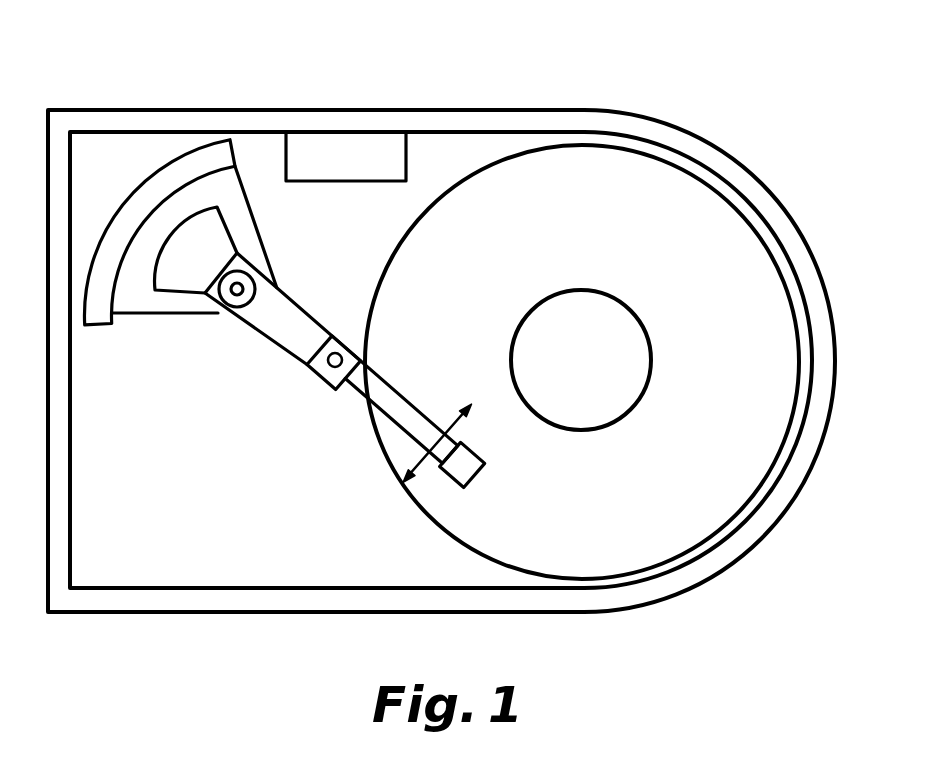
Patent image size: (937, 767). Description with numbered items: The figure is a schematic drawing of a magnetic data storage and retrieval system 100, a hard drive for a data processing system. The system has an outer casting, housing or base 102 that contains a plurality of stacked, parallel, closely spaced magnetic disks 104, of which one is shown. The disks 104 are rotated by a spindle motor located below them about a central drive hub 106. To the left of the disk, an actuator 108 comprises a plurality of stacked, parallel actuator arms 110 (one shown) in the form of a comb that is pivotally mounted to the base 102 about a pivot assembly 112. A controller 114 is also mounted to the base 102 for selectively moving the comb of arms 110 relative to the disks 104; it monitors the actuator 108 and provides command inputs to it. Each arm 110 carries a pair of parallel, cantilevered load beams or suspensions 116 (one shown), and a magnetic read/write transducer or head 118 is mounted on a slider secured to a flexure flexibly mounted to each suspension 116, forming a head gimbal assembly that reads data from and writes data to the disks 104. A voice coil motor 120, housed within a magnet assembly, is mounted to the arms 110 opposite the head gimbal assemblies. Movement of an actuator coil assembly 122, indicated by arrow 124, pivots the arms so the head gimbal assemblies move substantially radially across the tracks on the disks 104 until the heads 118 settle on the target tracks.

The magnetic data storage and retrieval system 100 is at (731, 52).
The base 102 is at (472, 110).
The magnetic disk 104 is at (718, 226).
The central drive hub 106 is at (553, 292).
The actuator 108 is at (190, 392).
The actuator arm 110 is at (253, 345).
The pivot assembly 112 is at (243, 289).
The controller 114 is at (342, 153).
The suspension 116 is at (380, 376).
The read/write head 118 is at (486, 464).
The voice coil motor 120 is at (130, 196).
The actuator coil assembly 122 is at (150, 298).
The arrow 124 is at (428, 445).